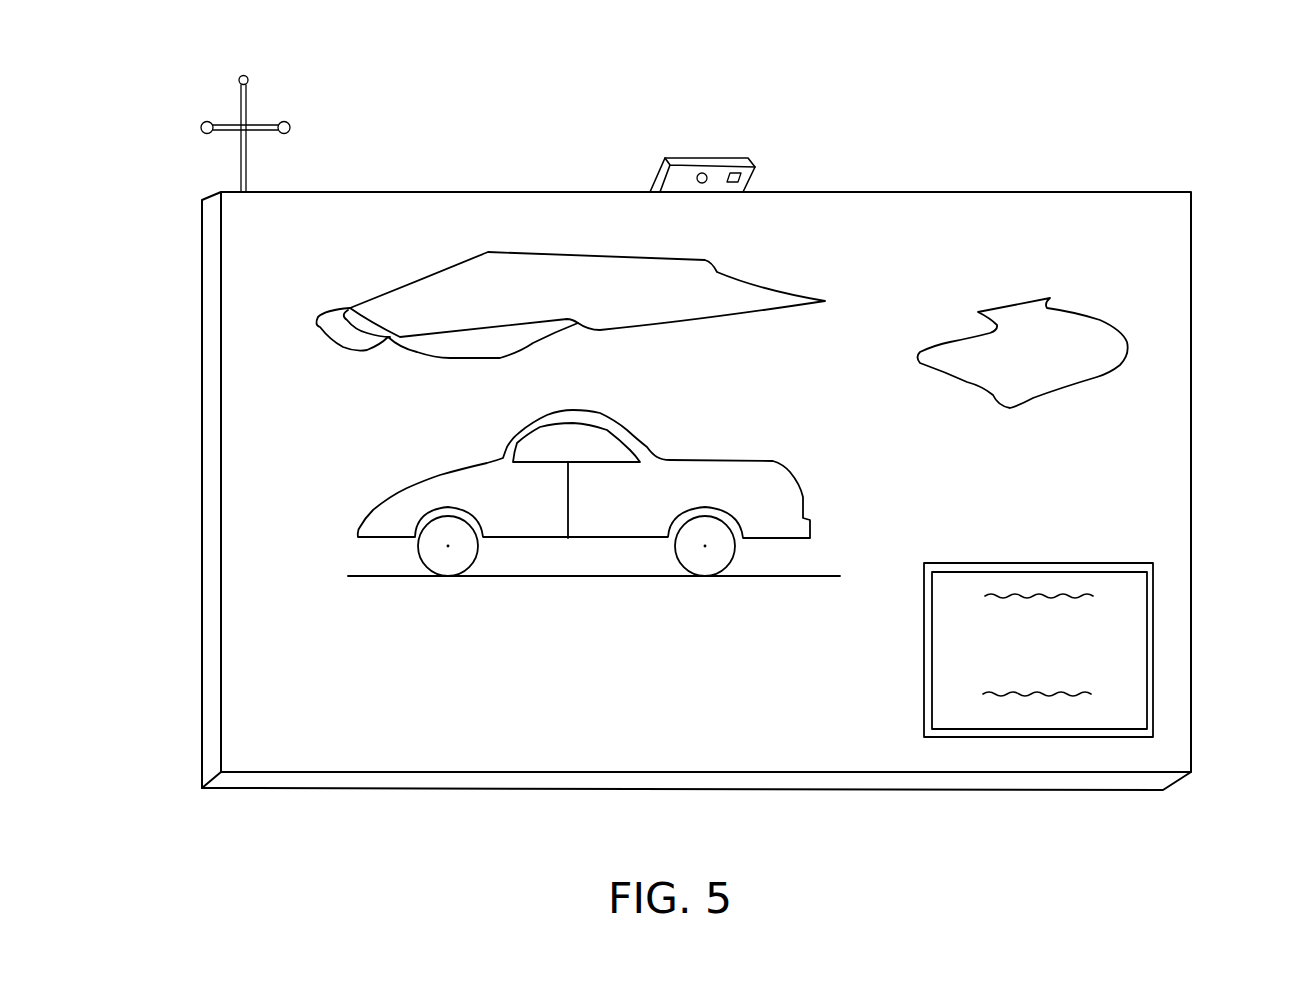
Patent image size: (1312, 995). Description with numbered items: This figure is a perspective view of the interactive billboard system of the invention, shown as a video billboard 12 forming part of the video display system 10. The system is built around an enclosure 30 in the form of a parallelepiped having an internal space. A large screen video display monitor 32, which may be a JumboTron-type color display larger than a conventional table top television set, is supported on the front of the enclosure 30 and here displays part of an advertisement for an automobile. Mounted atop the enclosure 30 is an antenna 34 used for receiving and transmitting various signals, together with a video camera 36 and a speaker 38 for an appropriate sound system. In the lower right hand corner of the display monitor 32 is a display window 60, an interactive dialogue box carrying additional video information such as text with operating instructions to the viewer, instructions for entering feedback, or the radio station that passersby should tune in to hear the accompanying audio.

The video display system 10 is at (1159, 171).
The video billboard 12 is at (1015, 189).
The enclosure 30 is at (212, 300).
The large screen video display monitor 32 is at (365, 212).
The antenna 34 is at (248, 110).
The video camera 36 is at (705, 173).
The speaker 38 is at (743, 177).
The display window 60 is at (1132, 624).